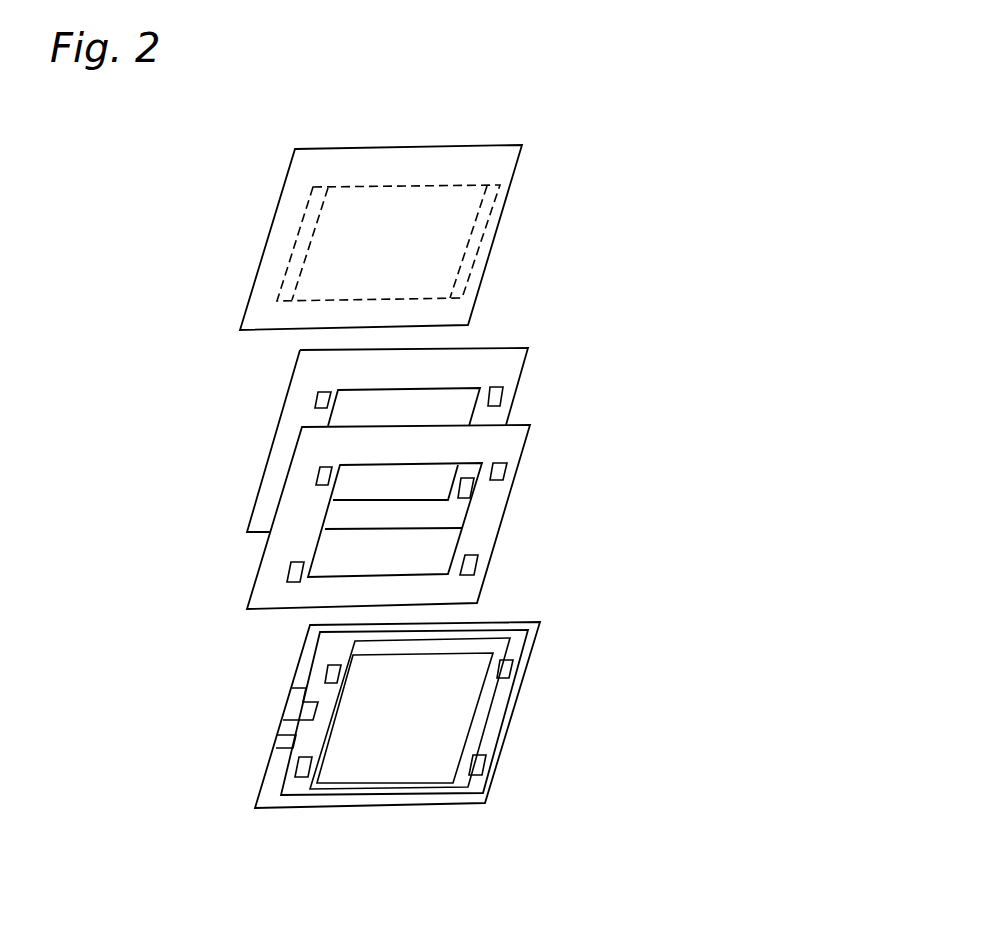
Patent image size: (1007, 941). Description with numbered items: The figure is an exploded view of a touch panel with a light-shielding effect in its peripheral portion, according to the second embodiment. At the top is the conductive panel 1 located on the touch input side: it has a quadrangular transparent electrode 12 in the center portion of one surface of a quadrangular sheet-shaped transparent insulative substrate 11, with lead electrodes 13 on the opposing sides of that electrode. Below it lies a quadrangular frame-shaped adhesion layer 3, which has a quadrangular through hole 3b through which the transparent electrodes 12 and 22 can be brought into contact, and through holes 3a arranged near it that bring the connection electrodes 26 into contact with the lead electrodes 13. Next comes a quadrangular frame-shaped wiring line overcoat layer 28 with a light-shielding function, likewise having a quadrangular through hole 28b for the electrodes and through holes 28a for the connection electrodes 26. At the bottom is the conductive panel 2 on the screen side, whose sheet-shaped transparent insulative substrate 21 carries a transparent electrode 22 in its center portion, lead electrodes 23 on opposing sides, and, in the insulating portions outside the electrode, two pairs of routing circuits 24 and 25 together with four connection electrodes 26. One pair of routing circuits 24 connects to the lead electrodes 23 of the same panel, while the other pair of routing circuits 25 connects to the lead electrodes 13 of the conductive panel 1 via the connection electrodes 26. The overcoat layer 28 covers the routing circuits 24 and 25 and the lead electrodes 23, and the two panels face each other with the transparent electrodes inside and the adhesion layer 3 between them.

The conductive panel 1 is at (562, 232).
The conductive panel 2 is at (640, 472).
The adhesion layer 3 is at (528, 390).
The through holes 3a is at (315, 398).
The through hole 3b is at (432, 400).
The transparent insulative substrate 11 is at (522, 155).
The transparent electrode 12 is at (437, 253).
The lead electrodes 13 is at (488, 208).
The transparent insulative substrate 21 is at (535, 647).
The transparent electrode 22 is at (372, 765).
The lead electrodes 23 is at (478, 645).
The routing circuits 24 is at (287, 742).
The routing circuits 25 is at (490, 727).
The connection electrodes 26 is at (333, 666).
The wiring line overcoat layer 28 is at (507, 528).
The through holes 28a is at (316, 472).
The through hole 28b is at (337, 552).